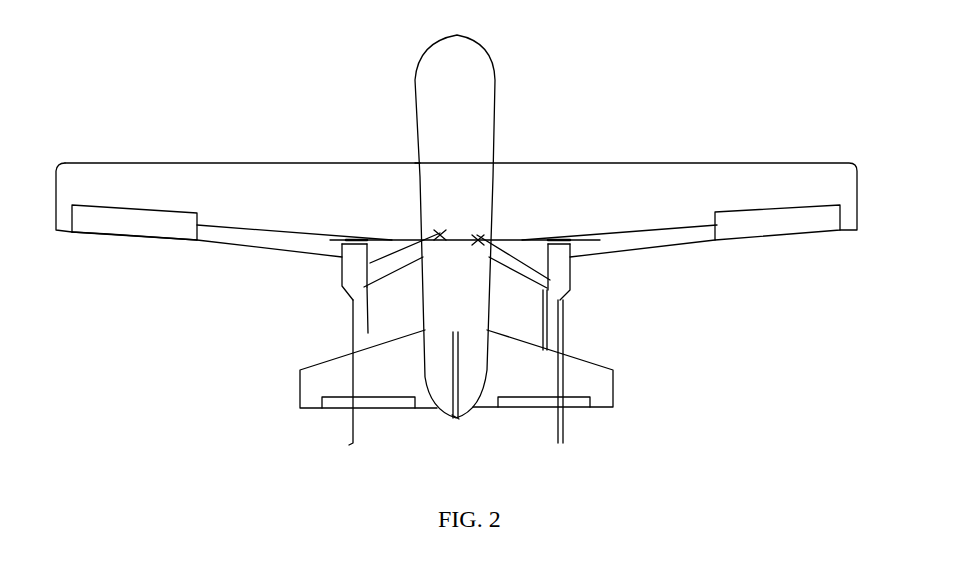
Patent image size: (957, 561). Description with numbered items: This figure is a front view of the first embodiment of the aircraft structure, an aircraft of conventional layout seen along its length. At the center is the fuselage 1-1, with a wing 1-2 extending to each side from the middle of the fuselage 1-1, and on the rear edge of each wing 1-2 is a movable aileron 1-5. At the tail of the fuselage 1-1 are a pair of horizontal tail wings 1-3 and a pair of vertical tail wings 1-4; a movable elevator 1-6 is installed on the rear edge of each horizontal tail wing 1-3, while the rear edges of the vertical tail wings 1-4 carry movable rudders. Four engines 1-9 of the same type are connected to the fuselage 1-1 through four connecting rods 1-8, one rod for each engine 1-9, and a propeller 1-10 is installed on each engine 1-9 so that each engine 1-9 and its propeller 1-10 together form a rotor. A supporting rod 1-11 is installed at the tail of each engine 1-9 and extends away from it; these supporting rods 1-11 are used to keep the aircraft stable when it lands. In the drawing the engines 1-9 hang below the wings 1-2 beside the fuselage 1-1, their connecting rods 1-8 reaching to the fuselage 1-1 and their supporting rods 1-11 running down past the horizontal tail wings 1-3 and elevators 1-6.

The fuselage 1-1 is at (487, 53).
The wing 1-2 is at (637, 163).
The horizontal tail wing 1-3 is at (597, 365).
The vertical tail wing 1-4 is at (460, 355).
The aileron 1-5 is at (762, 233).
The elevator 1-6 is at (518, 407).
The connecting rod 1-8 is at (500, 245).
The engine 1-9 is at (344, 275).
The propeller 1-10 is at (336, 240).
The supporting rod 1-11 is at (352, 332).